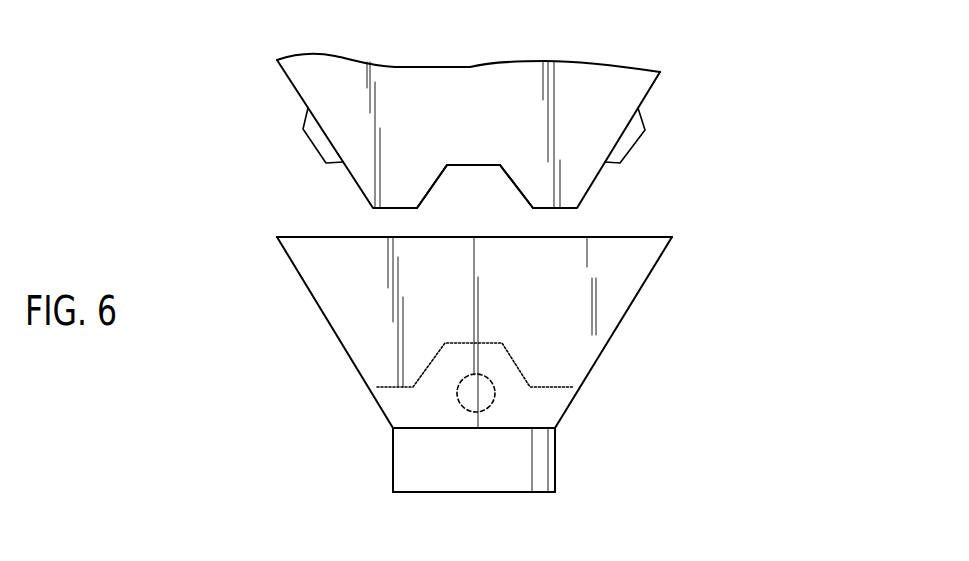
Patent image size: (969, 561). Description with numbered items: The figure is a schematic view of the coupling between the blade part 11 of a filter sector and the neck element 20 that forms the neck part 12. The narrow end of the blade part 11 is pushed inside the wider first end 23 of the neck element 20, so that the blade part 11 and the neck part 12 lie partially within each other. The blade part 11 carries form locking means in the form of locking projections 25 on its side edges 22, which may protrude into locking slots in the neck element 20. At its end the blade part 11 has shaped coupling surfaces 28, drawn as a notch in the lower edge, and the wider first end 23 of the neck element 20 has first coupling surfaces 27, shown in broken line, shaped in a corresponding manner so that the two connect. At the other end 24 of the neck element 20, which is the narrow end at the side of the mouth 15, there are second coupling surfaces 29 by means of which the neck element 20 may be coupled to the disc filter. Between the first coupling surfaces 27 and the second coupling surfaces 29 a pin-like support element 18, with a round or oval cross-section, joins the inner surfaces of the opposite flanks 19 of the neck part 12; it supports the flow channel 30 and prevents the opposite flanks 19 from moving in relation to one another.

The blade part 11 is at (210, 99).
The neck part 12 is at (253, 357).
The mouth 15 is at (497, 491).
The support element 18 is at (458, 394).
The flanks 19 is at (607, 292).
The neck element 20 is at (768, 342).
The side edges 22 is at (315, 303).
The first end 23 is at (228, 210).
The other end 24 is at (261, 464).
The locking projections 25 is at (313, 138).
The first coupling surfaces 27 is at (443, 344).
The coupling surfaces 28 is at (481, 166).
The second coupling surfaces 29 is at (425, 463).
The flow channel 30 is at (544, 410).